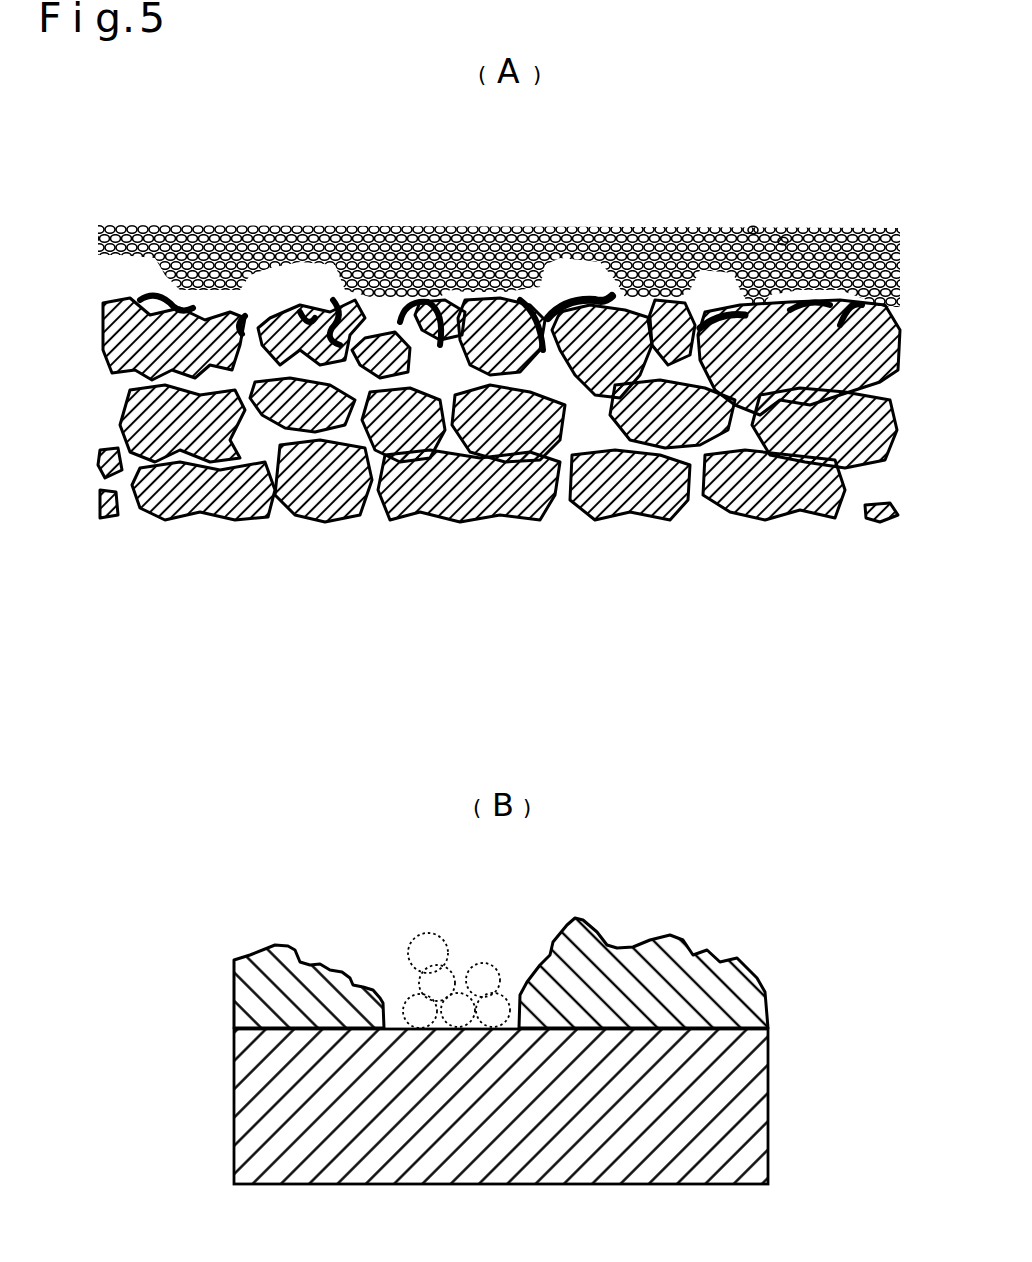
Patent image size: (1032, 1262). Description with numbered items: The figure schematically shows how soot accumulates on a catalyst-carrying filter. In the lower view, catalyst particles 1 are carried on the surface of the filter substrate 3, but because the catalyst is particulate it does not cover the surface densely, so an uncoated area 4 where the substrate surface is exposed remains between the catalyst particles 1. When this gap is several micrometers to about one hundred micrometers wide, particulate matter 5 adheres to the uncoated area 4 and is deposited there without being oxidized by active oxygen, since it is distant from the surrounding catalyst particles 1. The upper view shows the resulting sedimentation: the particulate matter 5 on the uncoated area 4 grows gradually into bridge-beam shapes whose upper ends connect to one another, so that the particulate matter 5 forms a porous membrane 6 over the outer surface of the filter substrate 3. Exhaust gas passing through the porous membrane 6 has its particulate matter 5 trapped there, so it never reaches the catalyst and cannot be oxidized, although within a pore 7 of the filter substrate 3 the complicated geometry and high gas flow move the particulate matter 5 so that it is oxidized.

The catalyst particles 1 is at (423, 300).
The filter substrate 3 is at (750, 1117).
The uncoated area 4 is at (476, 957).
The particulate matter 5 is at (783, 240).
The porous membrane 6 is at (641, 218).
The pore 7 is at (515, 378).